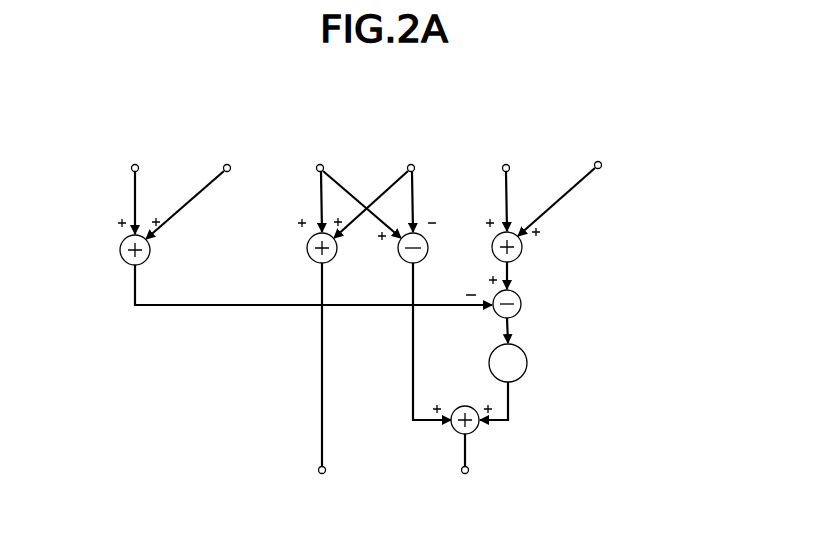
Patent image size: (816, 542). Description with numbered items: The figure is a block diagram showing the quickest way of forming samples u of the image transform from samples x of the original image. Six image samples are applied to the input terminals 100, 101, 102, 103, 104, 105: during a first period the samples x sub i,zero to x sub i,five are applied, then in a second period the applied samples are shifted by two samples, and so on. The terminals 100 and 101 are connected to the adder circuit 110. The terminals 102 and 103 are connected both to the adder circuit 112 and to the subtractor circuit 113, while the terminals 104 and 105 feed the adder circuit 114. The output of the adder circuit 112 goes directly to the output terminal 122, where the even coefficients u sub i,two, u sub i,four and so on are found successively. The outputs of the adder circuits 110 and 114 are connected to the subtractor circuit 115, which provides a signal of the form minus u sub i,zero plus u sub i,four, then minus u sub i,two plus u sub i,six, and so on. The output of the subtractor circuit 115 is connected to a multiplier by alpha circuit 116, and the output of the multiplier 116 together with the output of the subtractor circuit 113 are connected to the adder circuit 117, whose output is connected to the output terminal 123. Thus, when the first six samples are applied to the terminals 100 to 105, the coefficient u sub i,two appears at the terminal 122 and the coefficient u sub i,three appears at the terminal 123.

The terminal 100 is at (131, 179).
The terminal 101 is at (237, 160).
The terminal 102 is at (331, 180).
The terminal 103 is at (425, 159).
The terminal 104 is at (514, 176).
The terminal 105 is at (622, 157).
The adder circuit 110 is at (148, 253).
The adder circuit 112 is at (307, 254).
The subtractor circuit 113 is at (402, 261).
The adder circuit 114 is at (519, 252).
The subtractor circuit 115 is at (521, 306).
The multiplier by alpha circuit 116 is at (527, 366).
The adder circuit 117 is at (462, 407).
The output terminal 122 is at (355, 494).
The output terminal 123 is at (564, 469).